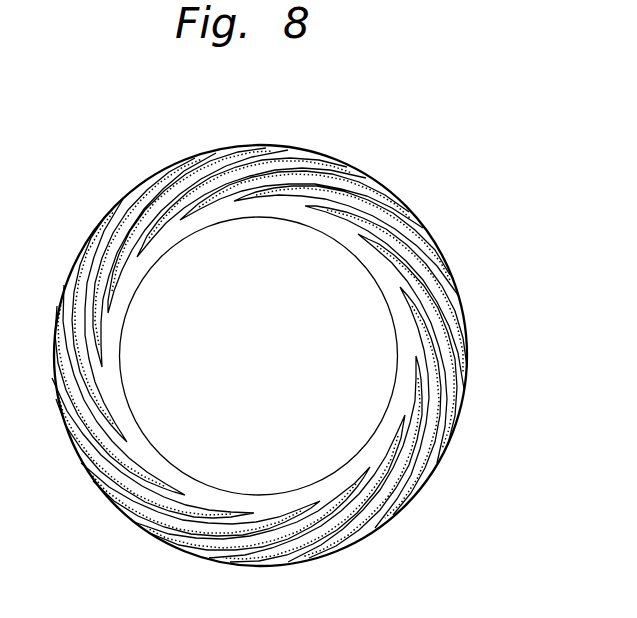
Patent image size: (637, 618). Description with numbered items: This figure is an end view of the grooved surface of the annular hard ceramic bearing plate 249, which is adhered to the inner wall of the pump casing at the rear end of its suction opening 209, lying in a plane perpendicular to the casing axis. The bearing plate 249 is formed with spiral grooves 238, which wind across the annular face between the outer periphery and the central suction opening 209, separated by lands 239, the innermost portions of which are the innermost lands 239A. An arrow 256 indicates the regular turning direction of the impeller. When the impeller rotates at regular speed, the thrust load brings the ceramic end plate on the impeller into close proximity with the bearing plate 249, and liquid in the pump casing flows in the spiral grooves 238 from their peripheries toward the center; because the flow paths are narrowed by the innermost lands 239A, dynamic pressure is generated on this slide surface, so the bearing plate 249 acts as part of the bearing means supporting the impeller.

The spiral grooves 238 is at (173, 168).
The annular hard ceramic bearing plate 249 is at (117, 205).
The arrow 256 is at (339, 130).
The lands 239 is at (458, 318).
The innermost lands 239A is at (148, 460).
The suction opening 209 is at (291, 362).